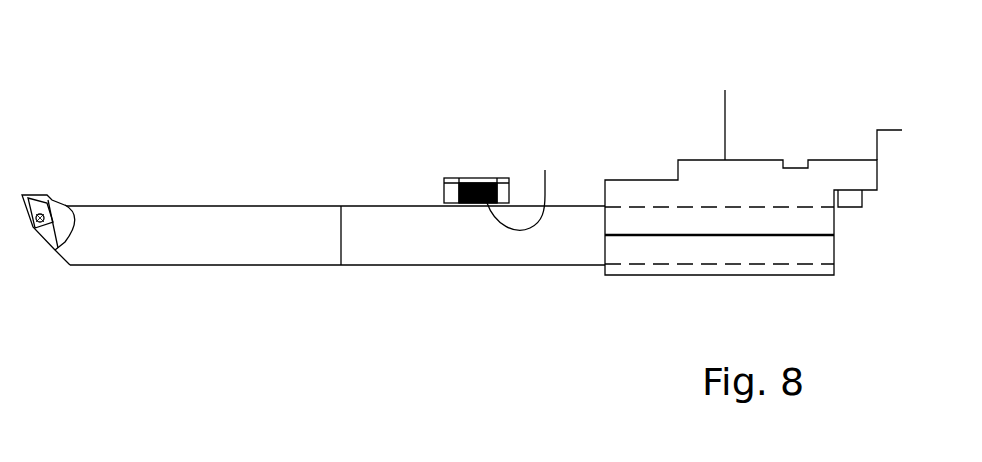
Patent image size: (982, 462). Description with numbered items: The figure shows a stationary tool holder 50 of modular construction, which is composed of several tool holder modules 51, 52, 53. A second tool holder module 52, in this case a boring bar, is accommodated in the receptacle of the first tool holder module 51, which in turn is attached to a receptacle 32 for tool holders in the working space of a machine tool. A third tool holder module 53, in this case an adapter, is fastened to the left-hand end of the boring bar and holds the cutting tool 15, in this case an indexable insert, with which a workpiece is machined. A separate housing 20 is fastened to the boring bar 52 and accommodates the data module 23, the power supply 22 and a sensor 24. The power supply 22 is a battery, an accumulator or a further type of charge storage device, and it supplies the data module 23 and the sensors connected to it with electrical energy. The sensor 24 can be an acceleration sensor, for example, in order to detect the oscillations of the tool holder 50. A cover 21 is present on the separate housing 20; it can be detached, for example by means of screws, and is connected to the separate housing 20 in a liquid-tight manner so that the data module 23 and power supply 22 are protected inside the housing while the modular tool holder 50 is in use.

The cutting tool 15 is at (42, 195).
The separate housing 20 is at (473, 177).
The cover 21 is at (497, 177).
The power supply 22 is at (457, 190).
The data module 23 is at (444, 190).
The sensor 24 is at (545, 170).
The receptacle for tool holders 32 is at (817, 116).
The stationary tool holder 50 is at (582, 284).
The first tool holder module 51 is at (648, 253).
The second tool holder module 52 is at (403, 238).
The third tool holder module 53 is at (193, 237).